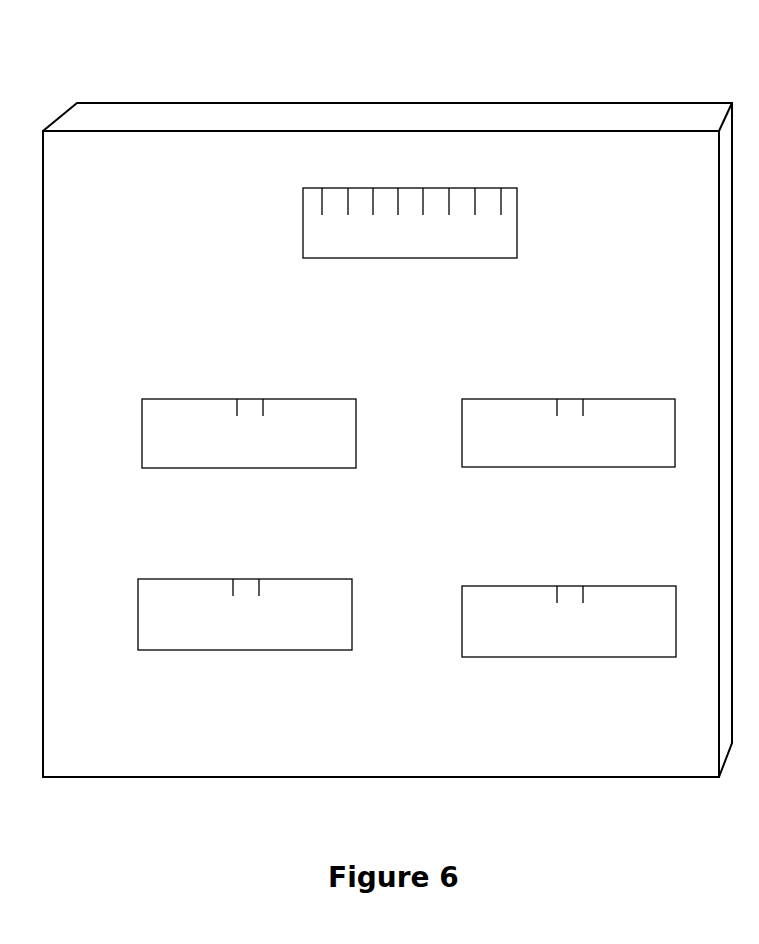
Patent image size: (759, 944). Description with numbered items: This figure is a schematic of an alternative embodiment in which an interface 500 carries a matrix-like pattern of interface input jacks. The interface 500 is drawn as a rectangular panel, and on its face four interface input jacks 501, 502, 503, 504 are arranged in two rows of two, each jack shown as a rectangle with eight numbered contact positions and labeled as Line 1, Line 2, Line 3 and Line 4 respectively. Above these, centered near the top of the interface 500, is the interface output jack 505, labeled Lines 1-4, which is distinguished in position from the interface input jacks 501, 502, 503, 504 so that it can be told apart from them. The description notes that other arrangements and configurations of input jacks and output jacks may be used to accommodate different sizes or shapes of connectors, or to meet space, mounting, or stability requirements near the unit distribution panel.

The interface 500 is at (553, 103).
The interface input jack 501 is at (253, 690).
The interface input jack 502 is at (580, 697).
The interface input jack 503 is at (258, 508).
The interface input jack 504 is at (578, 508).
The interface output jack 505 is at (420, 298).